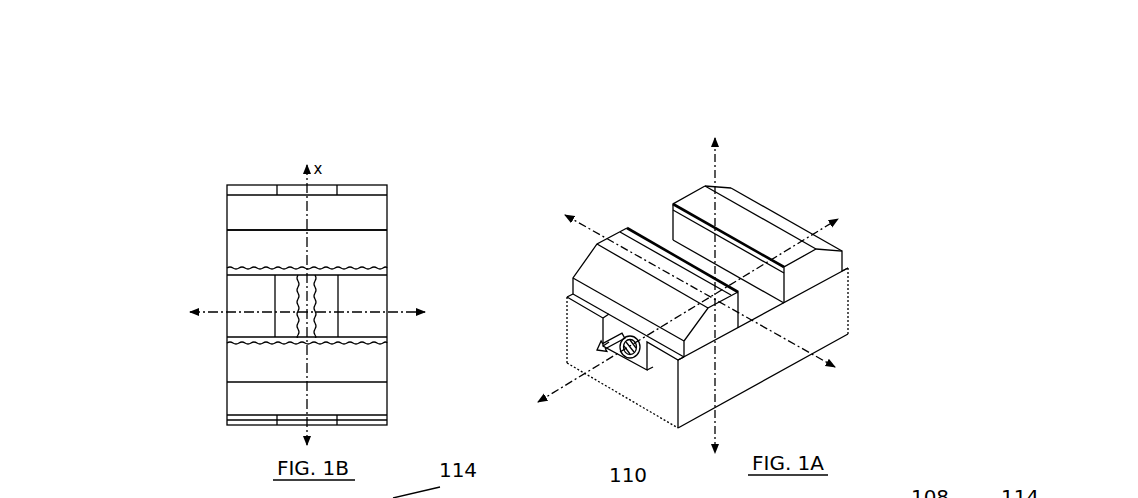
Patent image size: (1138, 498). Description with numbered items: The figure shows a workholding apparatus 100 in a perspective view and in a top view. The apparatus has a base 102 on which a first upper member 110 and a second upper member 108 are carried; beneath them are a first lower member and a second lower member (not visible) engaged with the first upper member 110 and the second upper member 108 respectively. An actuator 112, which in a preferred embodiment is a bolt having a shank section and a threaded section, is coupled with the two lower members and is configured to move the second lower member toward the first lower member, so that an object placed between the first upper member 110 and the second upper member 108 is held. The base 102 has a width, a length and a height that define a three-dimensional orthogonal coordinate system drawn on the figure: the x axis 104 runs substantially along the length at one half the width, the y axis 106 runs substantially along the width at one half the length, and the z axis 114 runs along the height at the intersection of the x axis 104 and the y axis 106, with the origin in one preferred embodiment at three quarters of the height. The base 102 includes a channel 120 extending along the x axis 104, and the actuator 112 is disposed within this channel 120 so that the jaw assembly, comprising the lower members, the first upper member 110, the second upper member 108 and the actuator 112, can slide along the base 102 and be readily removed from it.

In FIG. 1A, the workholding apparatus 100 is at (968, 142).
In FIG. 1A, the base 102 is at (856, 313).
In FIG. 1B, the x axis 104 is at (307, 185).
In FIG. 1A, the x axis 104 is at (840, 222).
In FIG. 1B, the y axis 106 is at (423, 310).
In FIG. 1A, the y axis 106 is at (845, 356).
In FIG. 1B, the second upper member 108 is at (262, 250).
In FIG. 1A, the second upper member 108 is at (758, 210).
In FIG. 1B, the first upper member 110 is at (258, 360).
In FIG. 1A, the first upper member 110 is at (603, 293).
In FIG. 1B, the actuator 112 is at (298, 290).
In FIG. 1A, the actuator 112 is at (632, 360).
In FIG. 1A, the z axis 114 is at (718, 420).
In FIG. 1A, the channel 120 is at (602, 350).